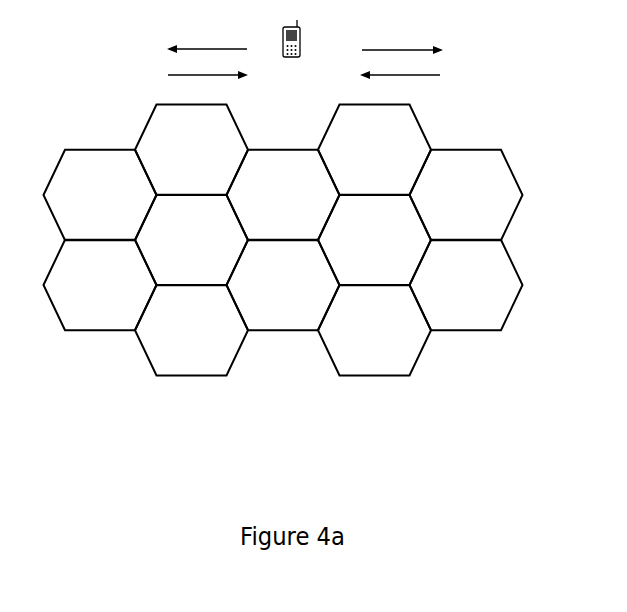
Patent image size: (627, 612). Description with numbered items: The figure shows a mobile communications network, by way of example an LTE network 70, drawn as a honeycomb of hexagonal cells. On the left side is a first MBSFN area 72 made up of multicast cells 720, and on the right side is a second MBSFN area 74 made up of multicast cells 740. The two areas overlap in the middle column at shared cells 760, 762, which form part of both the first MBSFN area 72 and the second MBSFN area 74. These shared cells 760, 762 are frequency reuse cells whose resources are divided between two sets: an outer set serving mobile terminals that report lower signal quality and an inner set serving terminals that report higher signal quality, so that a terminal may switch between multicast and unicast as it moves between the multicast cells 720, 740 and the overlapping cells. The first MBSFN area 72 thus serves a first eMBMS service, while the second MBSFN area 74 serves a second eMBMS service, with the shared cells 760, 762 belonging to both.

The LTE network 70 is at (290, 258).
The first MBSFN area 72 is at (137, 279).
The second MBSFN area 74 is at (442, 271).
The cells 720 is at (146, 240).
The cells 740 is at (510, 395).
The shared cell 760 is at (283, 195).
The shared cell 762 is at (282, 438).